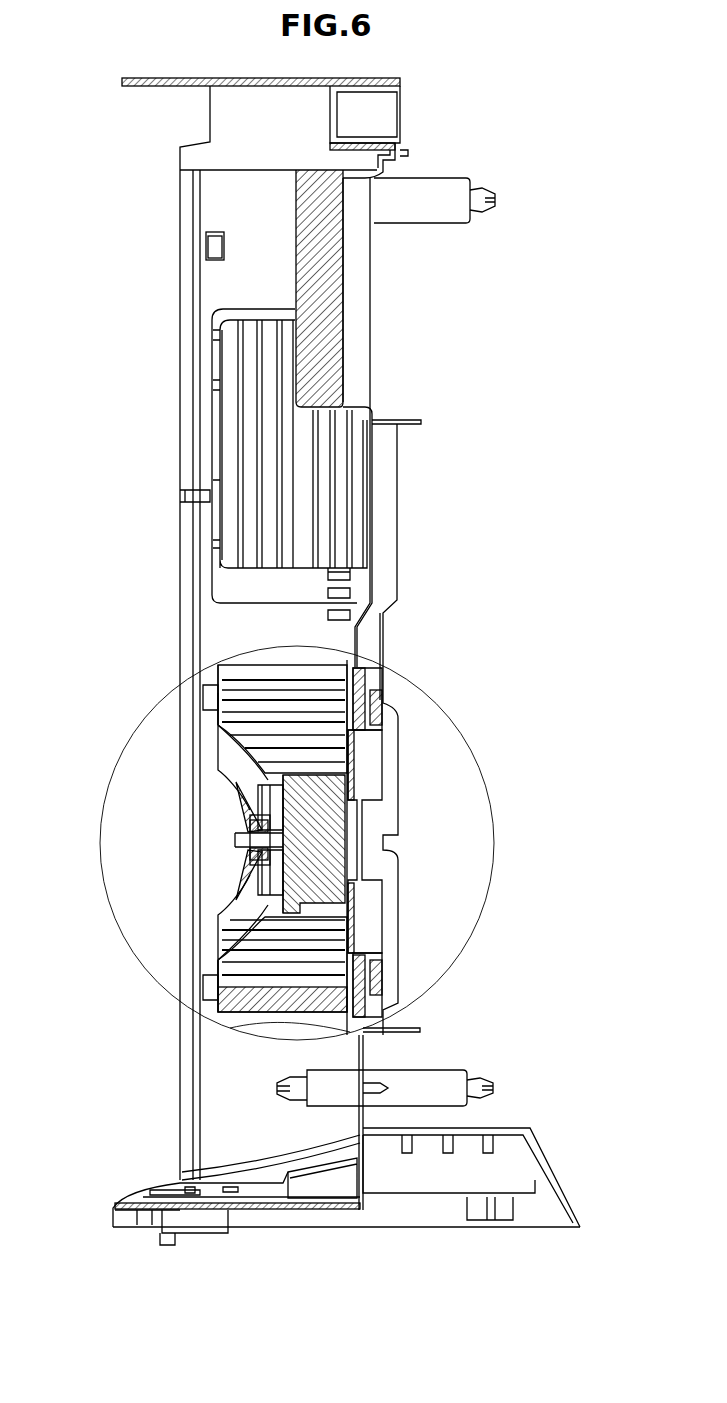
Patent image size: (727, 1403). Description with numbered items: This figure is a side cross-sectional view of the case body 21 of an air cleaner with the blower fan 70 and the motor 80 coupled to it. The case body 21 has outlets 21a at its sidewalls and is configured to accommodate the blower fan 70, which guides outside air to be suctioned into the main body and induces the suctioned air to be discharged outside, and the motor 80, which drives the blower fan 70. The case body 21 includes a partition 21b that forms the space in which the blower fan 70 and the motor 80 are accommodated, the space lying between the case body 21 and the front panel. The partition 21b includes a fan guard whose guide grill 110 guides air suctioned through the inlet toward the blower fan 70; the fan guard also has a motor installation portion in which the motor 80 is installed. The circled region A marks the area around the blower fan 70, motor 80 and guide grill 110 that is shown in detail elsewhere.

The case body 21 is at (240, 200).
The outlet 21a is at (255, 422).
The partition 21b is at (357, 1050).
The blower fan 70 is at (226, 768).
The motor 80 is at (248, 852).
The guide grill 110 is at (378, 800).
The detail region A is at (460, 730).